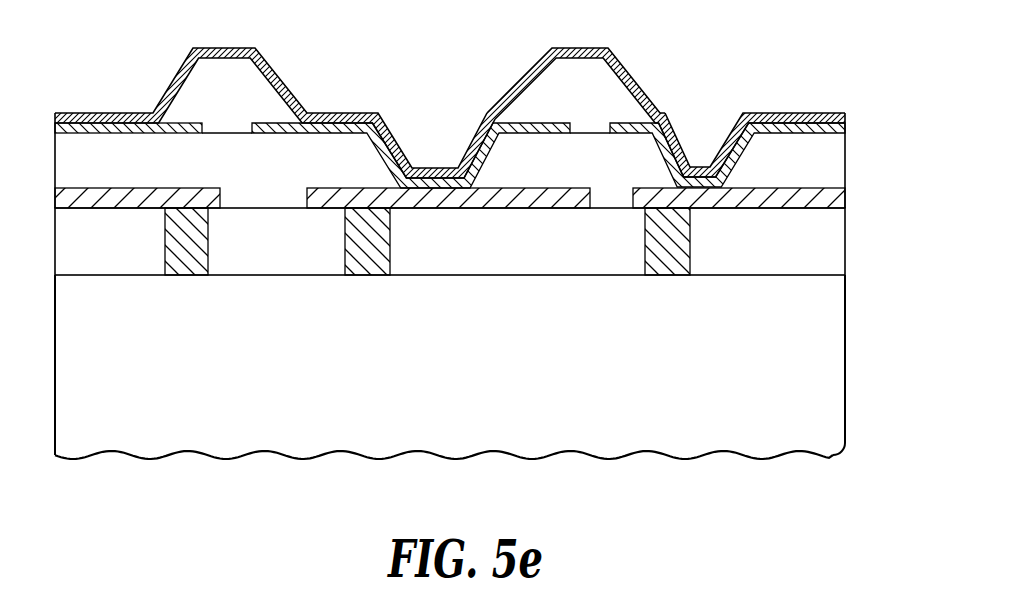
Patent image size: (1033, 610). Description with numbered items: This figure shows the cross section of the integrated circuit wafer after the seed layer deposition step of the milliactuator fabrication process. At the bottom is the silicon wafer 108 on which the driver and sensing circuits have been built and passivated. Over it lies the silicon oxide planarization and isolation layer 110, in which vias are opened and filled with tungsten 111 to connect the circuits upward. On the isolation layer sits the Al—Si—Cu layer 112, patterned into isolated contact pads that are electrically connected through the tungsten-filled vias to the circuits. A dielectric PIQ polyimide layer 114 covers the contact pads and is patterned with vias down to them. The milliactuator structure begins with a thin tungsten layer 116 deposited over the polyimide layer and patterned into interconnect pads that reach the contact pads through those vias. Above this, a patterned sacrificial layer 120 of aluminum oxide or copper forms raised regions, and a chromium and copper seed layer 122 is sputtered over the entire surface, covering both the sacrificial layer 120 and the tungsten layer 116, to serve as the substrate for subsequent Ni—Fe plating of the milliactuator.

The silicon wafer 108 is at (838, 388).
The silicon oxide planarization and isolation layer 110 is at (838, 255).
The tungsten 111 is at (677, 272).
The Al—Si—Cu layer 112 is at (838, 197).
The PIQ polyimide layer 114 is at (838, 155).
The tungsten layer 116 is at (848, 126).
The sacrificial layer 120 is at (600, 83).
The seed layer 122 is at (807, 115).